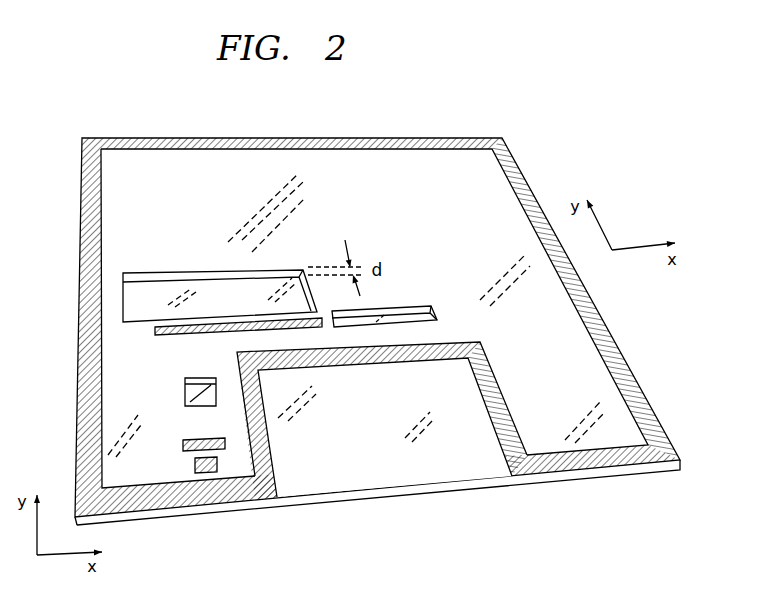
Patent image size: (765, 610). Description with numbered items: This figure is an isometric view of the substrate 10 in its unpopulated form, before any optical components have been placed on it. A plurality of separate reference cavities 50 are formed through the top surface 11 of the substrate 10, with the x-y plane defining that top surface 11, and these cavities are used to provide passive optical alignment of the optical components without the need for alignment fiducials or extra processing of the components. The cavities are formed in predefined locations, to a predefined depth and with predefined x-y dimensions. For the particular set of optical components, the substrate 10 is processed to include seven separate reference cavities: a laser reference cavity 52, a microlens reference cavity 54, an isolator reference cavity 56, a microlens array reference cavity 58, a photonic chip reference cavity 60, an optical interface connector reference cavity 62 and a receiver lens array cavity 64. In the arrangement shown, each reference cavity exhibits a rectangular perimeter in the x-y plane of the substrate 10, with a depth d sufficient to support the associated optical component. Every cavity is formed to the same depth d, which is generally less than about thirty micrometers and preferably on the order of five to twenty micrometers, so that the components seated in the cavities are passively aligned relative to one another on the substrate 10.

The substrate 10 is at (513, 143).
The top surface 11 is at (147, 160).
The reference cavities 50 is at (124, 426).
The laser reference cavity 52 is at (195, 463).
The microlens reference cavity 54 is at (188, 443).
The isolator reference cavity 56 is at (185, 389).
The microlens array reference cavity 58 is at (176, 334).
The photonic chip reference cavity 60 is at (138, 297).
The optical interface connector reference cavity 62 is at (452, 470).
The receiver lens array cavity 64 is at (418, 310).